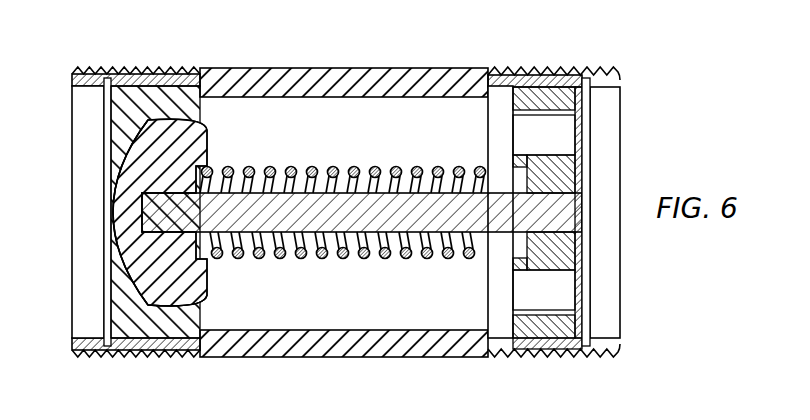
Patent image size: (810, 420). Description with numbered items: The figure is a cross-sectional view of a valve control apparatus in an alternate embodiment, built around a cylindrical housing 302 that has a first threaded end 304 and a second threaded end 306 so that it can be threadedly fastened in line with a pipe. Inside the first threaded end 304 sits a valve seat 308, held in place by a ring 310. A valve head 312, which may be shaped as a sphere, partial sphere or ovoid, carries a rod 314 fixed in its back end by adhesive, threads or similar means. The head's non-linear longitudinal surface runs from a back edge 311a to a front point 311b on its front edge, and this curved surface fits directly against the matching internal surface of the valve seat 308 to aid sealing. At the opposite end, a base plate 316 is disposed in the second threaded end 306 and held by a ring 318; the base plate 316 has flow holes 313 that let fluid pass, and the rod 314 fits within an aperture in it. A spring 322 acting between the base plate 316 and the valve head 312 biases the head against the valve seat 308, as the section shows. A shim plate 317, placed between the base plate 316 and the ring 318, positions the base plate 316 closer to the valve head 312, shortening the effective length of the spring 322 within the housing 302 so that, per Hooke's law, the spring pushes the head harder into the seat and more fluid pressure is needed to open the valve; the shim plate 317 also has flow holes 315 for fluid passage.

The cylindrical housing 302 is at (309, 86).
The first threaded end 304 is at (100, 68).
The second threaded end 306 is at (522, 70).
The valve seat 308 is at (132, 124).
The ring 310 is at (104, 111).
The back edge 311a is at (200, 306).
The front point 311b is at (104, 208).
The valve head 312 is at (157, 150).
The flow holes 313 is at (549, 130).
The rod 314 is at (418, 210).
The flow holes 315 is at (580, 141).
The base plate 316 is at (560, 342).
The shim plate 317 is at (578, 325).
The ring 318 is at (590, 108).
The spring 322 is at (353, 167).